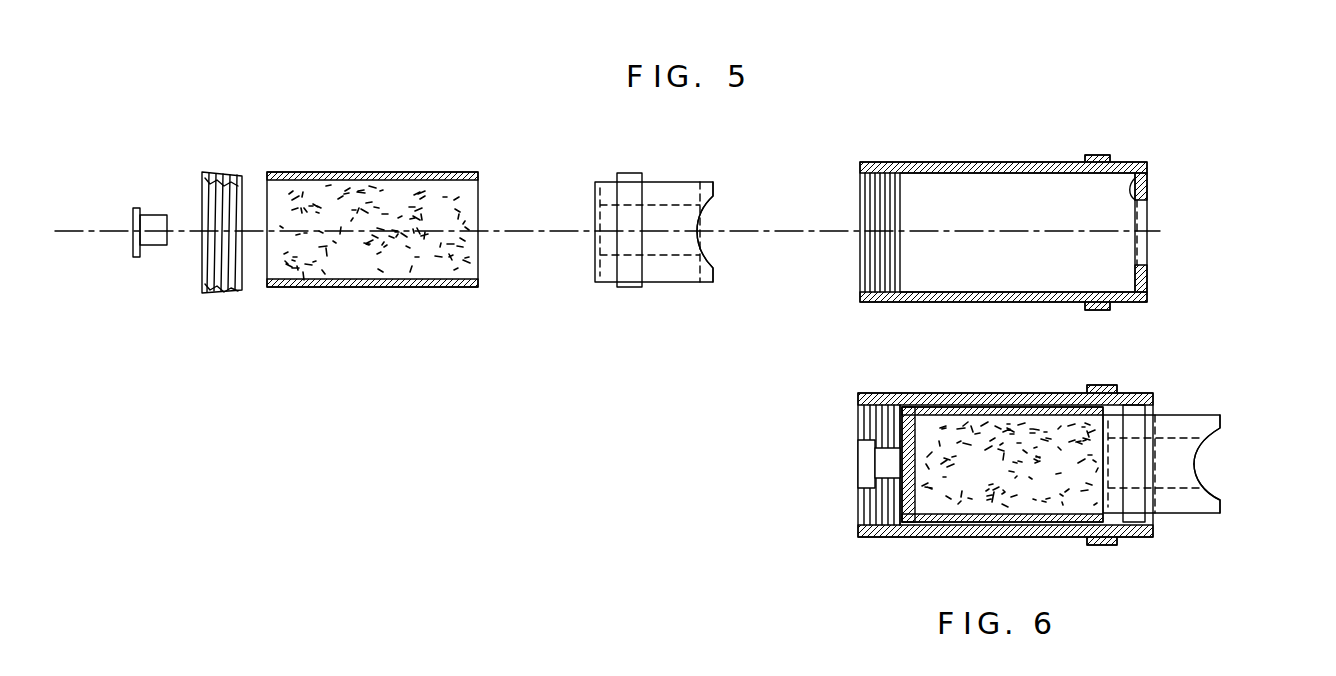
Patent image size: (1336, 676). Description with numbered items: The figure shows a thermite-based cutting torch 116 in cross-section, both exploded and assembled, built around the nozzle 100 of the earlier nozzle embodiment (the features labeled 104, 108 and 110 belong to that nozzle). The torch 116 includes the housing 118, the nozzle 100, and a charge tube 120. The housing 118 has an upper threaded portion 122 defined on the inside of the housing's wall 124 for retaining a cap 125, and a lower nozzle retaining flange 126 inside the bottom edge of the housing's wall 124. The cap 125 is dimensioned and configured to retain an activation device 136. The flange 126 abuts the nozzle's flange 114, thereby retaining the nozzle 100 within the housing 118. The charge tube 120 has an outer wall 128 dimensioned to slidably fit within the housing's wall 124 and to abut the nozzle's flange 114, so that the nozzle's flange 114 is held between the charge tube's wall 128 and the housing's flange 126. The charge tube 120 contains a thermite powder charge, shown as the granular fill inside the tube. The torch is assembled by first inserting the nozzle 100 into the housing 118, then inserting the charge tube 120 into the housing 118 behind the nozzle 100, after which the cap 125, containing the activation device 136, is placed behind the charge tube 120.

In FIG. 5, the nozzle 100 is at (565, 112).
In FIG. 6, the nozzle 100 is at (1175, 424).
In FIG. 5, the fitting 104 is at (650, 243).
In FIG. 6, the fitting 104 is at (1214, 472).
In FIG. 5, the barbed outlet 108 is at (712, 245).
In FIG. 6, the barbed outlet 108 is at (1222, 436).
In FIG. 5, the outlet port 110 is at (712, 200).
In FIG. 6, the outlet port 110 is at (1222, 420).
In FIG. 5, the nozzle's flange 114 is at (632, 288).
In FIG. 6, the nozzle's flange 114 is at (1133, 520).
In FIG. 6, the torch 116 is at (602, 565).
In FIG. 5, the housing 118 is at (1035, 159).
In FIG. 6, the housing 118 is at (1005, 465).
In FIG. 5, the charge tube 120 is at (372, 204).
In FIG. 6, the charge tube 120 is at (1002, 462).
In FIG. 5, the upper threaded portion 122 is at (862, 190).
In FIG. 6, the upper threaded portion 122 is at (879, 465).
In FIG. 5, the housing's wall 124 is at (968, 160).
In FIG. 5, the cap 125 is at (203, 293).
In FIG. 6, the cap 125 is at (880, 422).
In FIG. 5, the nozzle retaining flange 126 is at (1147, 207).
In FIG. 6, the nozzle retaining flange 126 is at (1153, 527).
In FIG. 5, the outer wall 128 is at (362, 287).
In FIG. 6, the outer wall 128 is at (985, 495).
In FIG. 5, the activation device 136 is at (153, 215).
In FIG. 6, the activation device 136 is at (880, 463).